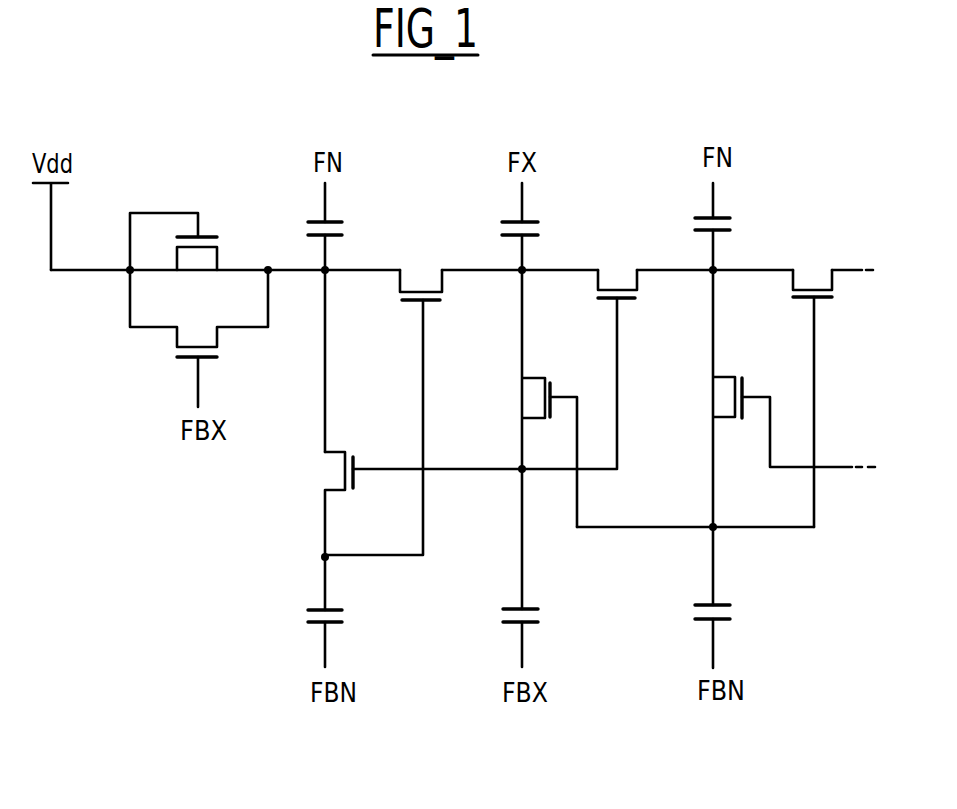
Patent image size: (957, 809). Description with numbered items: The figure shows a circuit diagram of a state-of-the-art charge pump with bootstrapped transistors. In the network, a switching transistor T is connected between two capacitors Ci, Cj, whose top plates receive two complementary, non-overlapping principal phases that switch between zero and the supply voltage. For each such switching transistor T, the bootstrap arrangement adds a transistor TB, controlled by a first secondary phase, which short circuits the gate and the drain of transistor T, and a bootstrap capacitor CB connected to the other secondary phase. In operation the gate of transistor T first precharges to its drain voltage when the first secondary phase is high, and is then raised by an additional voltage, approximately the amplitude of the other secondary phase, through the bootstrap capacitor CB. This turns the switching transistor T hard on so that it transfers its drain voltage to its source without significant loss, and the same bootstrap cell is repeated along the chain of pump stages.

The capacitor Ci is at (342, 220).
The capacitor Cj is at (537, 220).
The switching transistor T is at (417, 287).
The transistor TB is at (355, 452).
The bootstrap capacitor CB is at (343, 617).